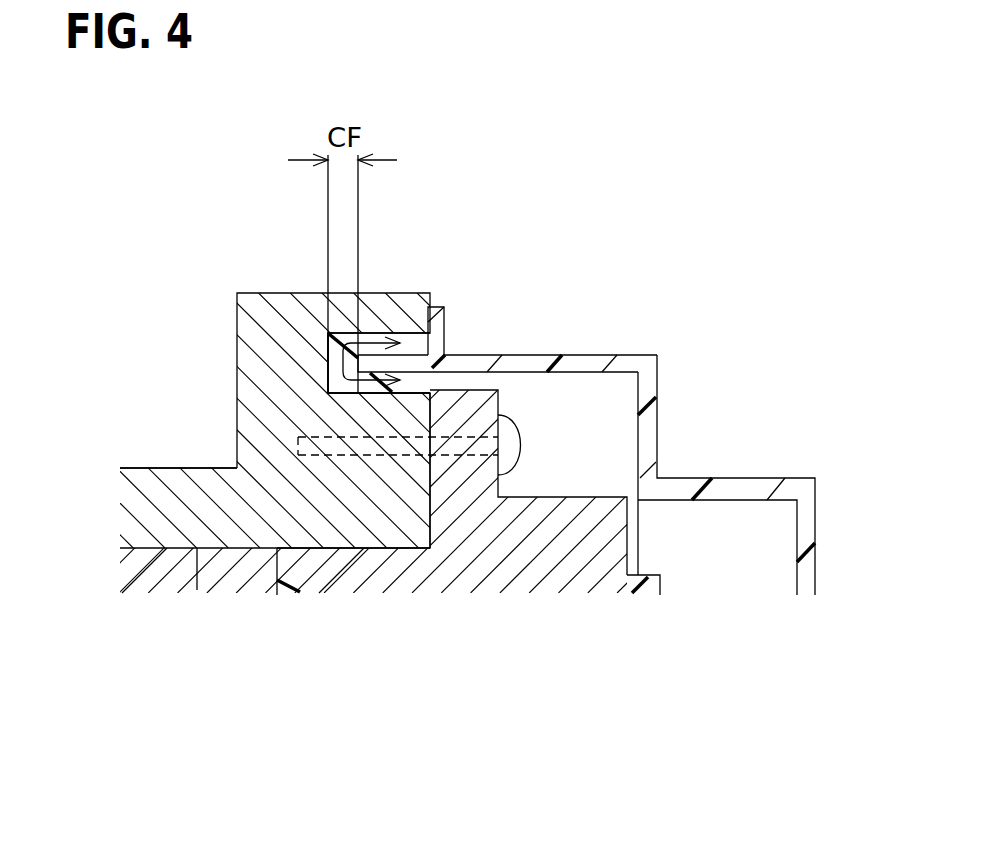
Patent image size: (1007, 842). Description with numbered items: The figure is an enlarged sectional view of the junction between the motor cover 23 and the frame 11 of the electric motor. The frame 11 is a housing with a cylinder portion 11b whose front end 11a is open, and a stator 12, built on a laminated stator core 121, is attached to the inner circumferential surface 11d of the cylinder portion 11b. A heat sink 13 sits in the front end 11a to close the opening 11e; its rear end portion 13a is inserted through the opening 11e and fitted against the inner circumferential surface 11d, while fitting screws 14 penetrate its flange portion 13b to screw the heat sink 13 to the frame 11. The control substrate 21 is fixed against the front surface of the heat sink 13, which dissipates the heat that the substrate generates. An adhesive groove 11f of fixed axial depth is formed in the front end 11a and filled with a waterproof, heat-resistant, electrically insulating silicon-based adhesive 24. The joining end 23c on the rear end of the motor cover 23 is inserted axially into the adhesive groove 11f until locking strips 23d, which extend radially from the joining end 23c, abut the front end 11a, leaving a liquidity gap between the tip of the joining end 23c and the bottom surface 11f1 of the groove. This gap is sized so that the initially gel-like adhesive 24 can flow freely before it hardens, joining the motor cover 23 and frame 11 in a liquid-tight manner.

The frame 11 is at (132, 512).
The front end 11a is at (428, 513).
The cylinder portion 11b is at (150, 468).
The inner circumferential surface 11d is at (250, 560).
The opening 11e is at (368, 580).
The adhesive groove 11f is at (350, 333).
The bottom surface 11f1 is at (328, 365).
The stator 12 is at (142, 575).
The stator core 121 is at (165, 582).
The heat sink 13 is at (577, 577).
The rear end portion 13a is at (325, 587).
The flange portion 13b is at (478, 405).
The fitting screws 14 is at (510, 447).
The control substrate 21 is at (635, 597).
The motor cover 23 is at (812, 528).
The joining end 23c is at (395, 345).
The locking strips 23d is at (444, 332).
The adhesive 24 is at (335, 390).